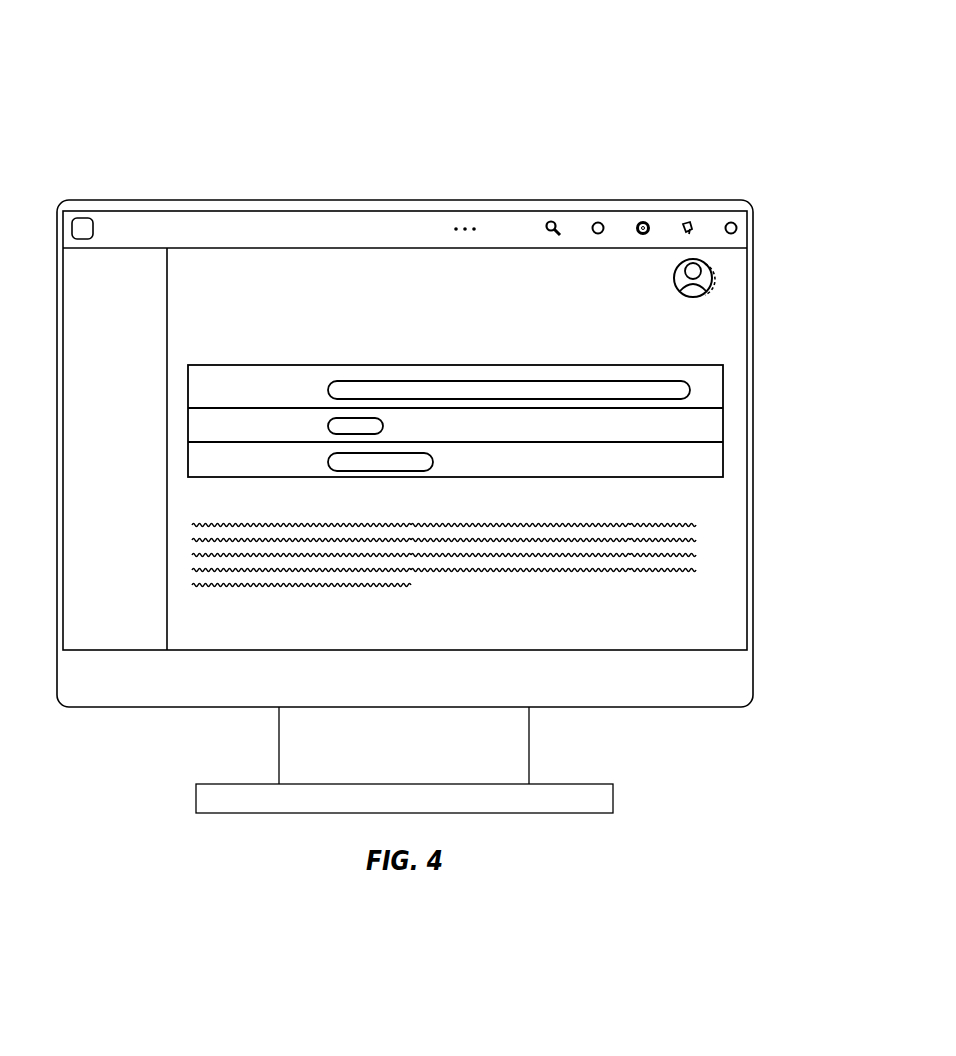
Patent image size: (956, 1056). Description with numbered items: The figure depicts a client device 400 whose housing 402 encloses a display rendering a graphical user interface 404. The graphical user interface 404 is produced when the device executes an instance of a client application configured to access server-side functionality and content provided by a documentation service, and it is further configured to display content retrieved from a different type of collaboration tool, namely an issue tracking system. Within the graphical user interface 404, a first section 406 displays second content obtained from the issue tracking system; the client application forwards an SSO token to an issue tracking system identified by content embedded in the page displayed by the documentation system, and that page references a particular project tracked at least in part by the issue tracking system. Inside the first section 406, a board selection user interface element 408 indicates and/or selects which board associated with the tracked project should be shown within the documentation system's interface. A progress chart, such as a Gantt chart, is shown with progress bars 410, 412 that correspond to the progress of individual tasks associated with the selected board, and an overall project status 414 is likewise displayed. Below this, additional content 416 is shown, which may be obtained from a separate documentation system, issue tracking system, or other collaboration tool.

The client device 400 is at (72, 77).
The housing 402 is at (755, 237).
The graphical user interface 404 is at (723, 303).
The first section 406 is at (727, 336).
The board selection user interface element 408 is at (721, 351).
The progress bar 410 is at (188, 387).
The progress bar 412 is at (188, 426).
The overall project status 414 is at (549, 381).
The additional content 416 is at (685, 492).